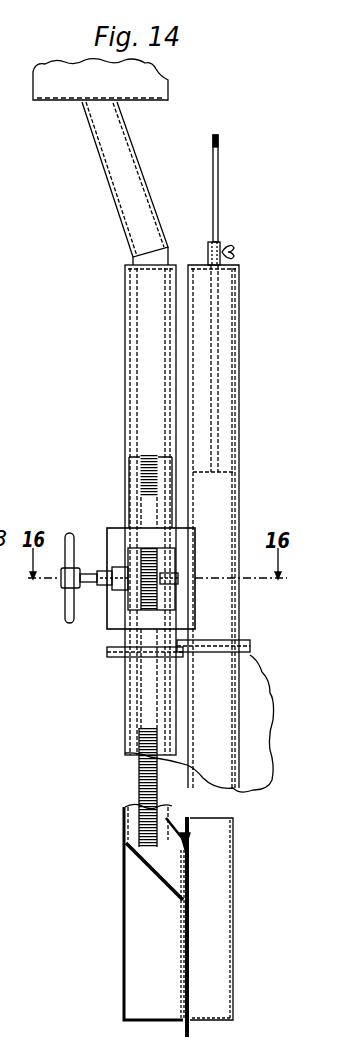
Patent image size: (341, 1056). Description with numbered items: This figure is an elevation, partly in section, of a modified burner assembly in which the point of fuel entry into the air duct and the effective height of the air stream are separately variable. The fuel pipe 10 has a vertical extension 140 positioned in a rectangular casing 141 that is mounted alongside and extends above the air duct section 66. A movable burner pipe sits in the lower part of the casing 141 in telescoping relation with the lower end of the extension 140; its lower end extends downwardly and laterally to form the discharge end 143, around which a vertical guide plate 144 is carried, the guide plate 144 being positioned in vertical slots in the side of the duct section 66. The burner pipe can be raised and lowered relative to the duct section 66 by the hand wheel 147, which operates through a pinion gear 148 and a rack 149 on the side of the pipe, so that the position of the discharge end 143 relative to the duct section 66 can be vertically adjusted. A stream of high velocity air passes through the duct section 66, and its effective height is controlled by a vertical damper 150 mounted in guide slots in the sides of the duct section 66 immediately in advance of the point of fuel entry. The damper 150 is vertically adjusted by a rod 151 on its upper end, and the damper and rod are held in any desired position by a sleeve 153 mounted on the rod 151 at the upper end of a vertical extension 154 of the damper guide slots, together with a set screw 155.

The fuel pipe 10 is at (141, 172).
The duct section 66 is at (233, 901).
The vertical extension 140 is at (160, 258).
The rectangular casing 141 is at (121, 893).
The discharge end 143 is at (158, 880).
The vertical guide plate 144 is at (185, 941).
The hand wheel 147 is at (68, 625).
The pinion gear 148 is at (143, 560).
The rack 149 is at (152, 508).
The vertical damper 150 is at (217, 490).
The rod 151 is at (220, 197).
The sleeve 153 is at (223, 243).
The vertical extension of the damper guide slots 154 is at (238, 407).
The set screw 155 is at (234, 251).